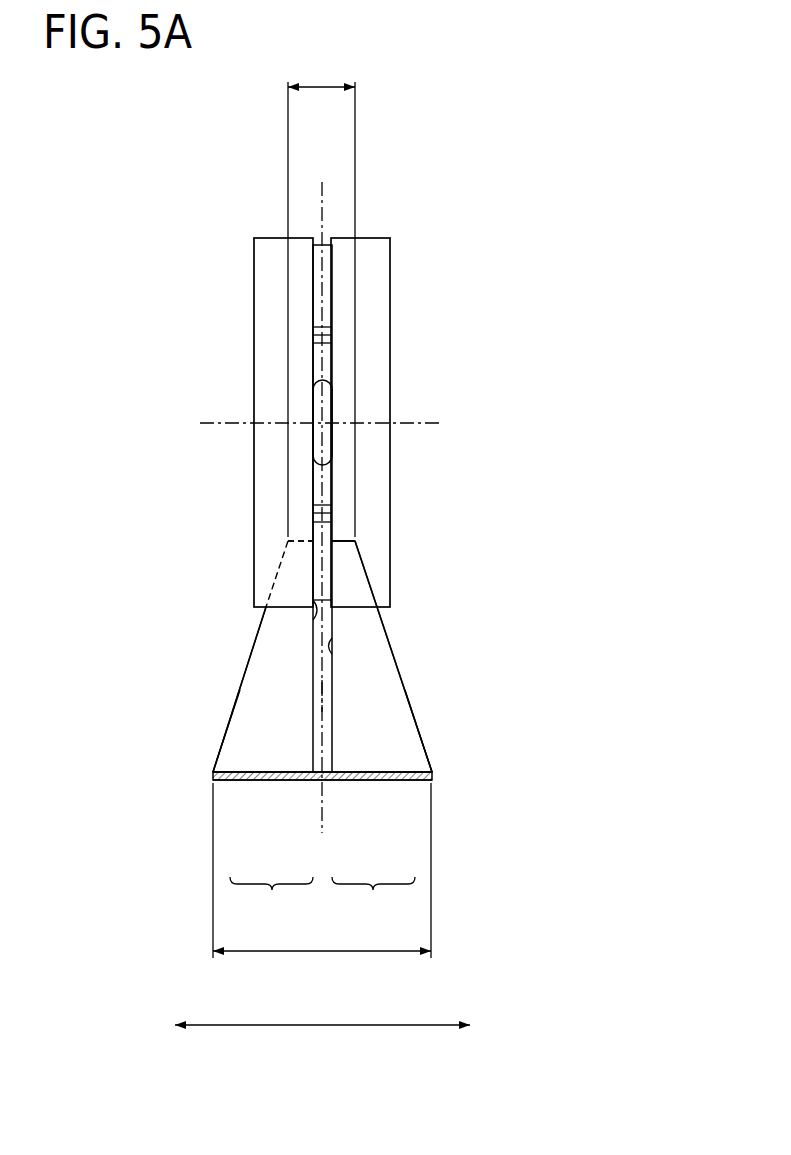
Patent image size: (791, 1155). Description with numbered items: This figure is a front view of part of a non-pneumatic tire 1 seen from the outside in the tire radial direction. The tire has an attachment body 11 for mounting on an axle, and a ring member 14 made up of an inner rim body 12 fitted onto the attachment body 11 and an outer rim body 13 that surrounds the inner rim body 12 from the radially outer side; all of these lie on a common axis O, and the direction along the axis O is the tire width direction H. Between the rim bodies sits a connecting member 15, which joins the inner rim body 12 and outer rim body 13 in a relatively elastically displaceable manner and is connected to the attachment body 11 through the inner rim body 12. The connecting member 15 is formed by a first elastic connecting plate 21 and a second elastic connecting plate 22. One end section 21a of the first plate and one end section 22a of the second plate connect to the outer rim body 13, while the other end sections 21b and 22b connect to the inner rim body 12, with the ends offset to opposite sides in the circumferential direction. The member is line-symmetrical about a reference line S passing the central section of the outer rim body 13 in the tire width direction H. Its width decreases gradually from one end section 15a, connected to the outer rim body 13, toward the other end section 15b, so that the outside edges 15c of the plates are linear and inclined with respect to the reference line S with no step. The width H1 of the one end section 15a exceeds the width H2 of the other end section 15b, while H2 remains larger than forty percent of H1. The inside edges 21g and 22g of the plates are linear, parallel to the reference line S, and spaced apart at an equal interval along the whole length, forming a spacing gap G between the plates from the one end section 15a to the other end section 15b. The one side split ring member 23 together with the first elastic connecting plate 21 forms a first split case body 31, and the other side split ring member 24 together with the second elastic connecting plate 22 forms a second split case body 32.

The non-pneumatic tire 1 is at (500, 228).
The attachment body 11 is at (312, 285).
The inner rim body 12 is at (392, 267).
The outer rim body 13 is at (434, 782).
The ring member 14 is at (632, 382).
The connecting member 15 is at (415, 706).
The one end section of connecting member 15a is at (434, 768).
The other end section of connecting member 15b is at (360, 538).
The outside edges of connecting member 15c is at (400, 670).
The first elastic connecting plate 21 is at (377, 733).
The one end section of first elastic connecting plate 21a is at (400, 757).
The other end section of first elastic connecting plate 21b is at (348, 553).
The inside edge of first elastic connecting plate 21g is at (334, 640).
The second elastic connecting plate 22 is at (280, 733).
The one end section of second elastic connecting plate 22a is at (233, 760).
The other end section of second elastic connecting plate 22b is at (291, 558).
The inside edge of second elastic connecting plate 22g is at (312, 601).
The one side split ring member 23 is at (345, 782).
The other side split ring member 24 is at (243, 782).
The first split case body 31 is at (377, 848).
The second split case body 32 is at (267, 848).
The spacing gap G is at (316, 696).
The tire width direction H is at (322, 1041).
The size of one end section in tire width direction H1 is at (322, 883).
The size of other end section in tire width direction H2 is at (321, 293).
The axis O is at (417, 423).
The reference line S is at (322, 213).